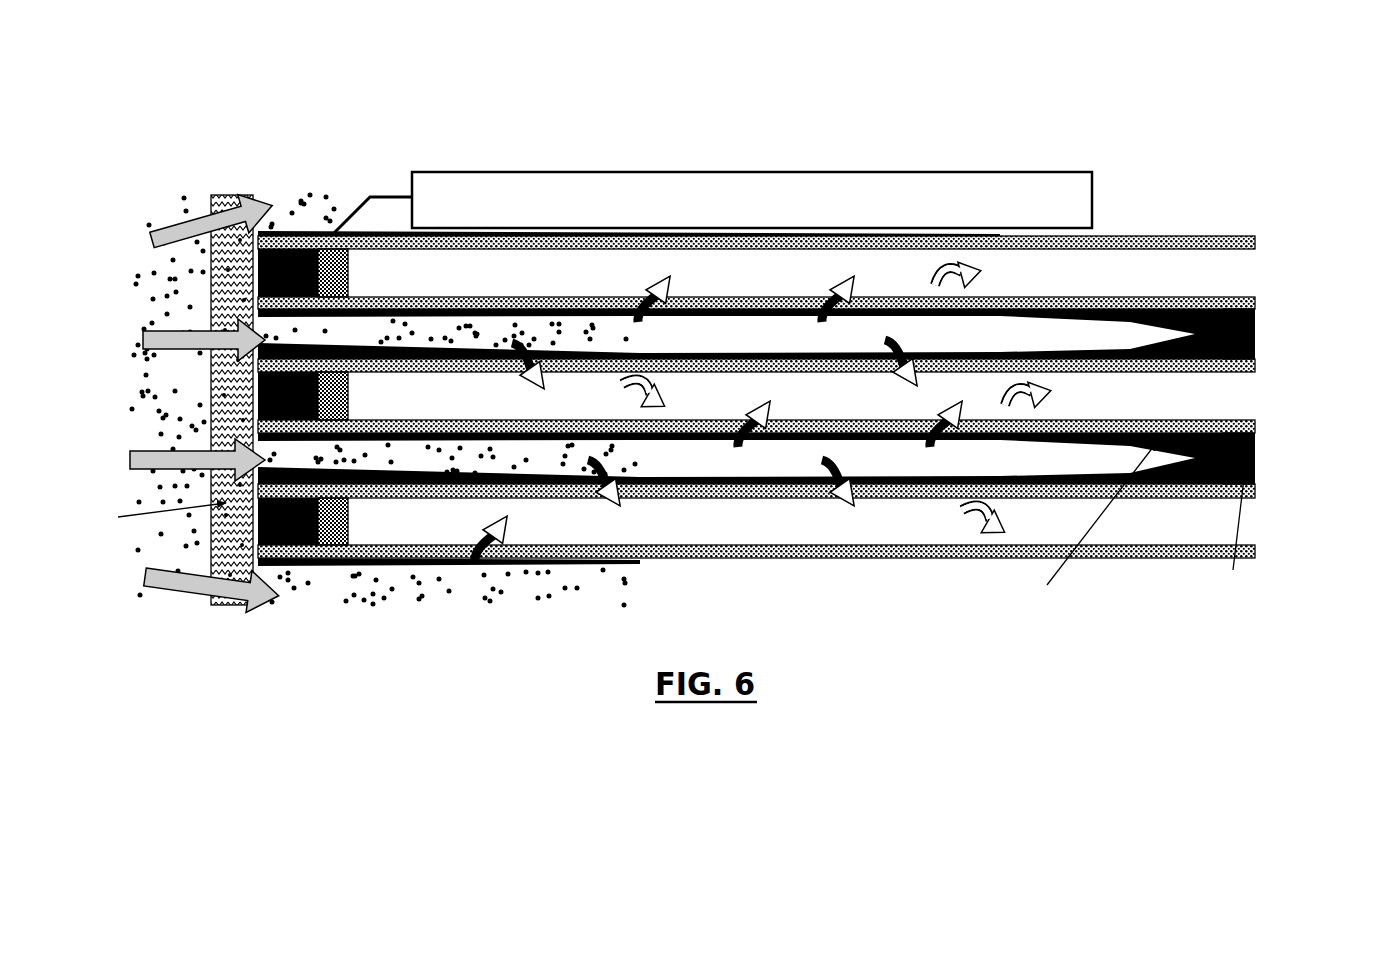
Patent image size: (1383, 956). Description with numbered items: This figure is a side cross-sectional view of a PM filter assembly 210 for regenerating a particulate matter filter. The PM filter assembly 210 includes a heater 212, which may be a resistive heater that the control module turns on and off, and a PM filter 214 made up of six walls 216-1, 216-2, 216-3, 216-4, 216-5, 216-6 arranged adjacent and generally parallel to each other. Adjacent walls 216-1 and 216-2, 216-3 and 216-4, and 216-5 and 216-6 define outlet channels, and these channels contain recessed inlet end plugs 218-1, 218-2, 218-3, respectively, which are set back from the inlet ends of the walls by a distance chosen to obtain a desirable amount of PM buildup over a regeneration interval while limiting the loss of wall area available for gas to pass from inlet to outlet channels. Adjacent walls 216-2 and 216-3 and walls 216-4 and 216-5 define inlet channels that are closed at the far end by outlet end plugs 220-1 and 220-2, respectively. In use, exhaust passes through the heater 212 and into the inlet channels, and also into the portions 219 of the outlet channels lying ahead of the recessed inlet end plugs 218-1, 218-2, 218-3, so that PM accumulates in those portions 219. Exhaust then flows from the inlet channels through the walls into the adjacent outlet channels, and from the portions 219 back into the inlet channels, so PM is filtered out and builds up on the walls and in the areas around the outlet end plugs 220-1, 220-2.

The PM filter assembly 210 is at (697, 359).
The heater 212 is at (232, 195).
The PM filter 214 is at (817, 354).
The wall 216-1 is at (1190, 236).
The wall 216-2 is at (1250, 297).
The wall 216-3 is at (1255, 365).
The wall 216-4 is at (1255, 425).
The wall 216-5 is at (1255, 490).
The wall 216-6 is at (1255, 550).
The recessed inlet end plug 218-1 is at (348, 274).
The recessed inlet end plug 218-2 is at (348, 398).
The recessed inlet end plug 218-3 is at (348, 526).
The portions of the outlet channels 219 is at (290, 272).
The outlet end plug 220-1 is at (1262, 340).
The outlet end plug 220-2 is at (1262, 455).